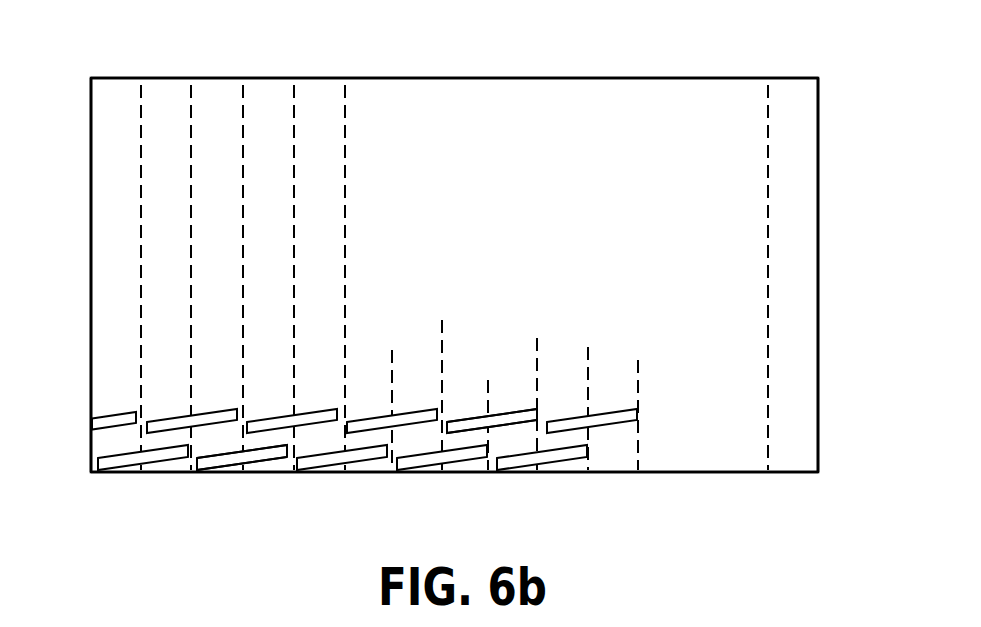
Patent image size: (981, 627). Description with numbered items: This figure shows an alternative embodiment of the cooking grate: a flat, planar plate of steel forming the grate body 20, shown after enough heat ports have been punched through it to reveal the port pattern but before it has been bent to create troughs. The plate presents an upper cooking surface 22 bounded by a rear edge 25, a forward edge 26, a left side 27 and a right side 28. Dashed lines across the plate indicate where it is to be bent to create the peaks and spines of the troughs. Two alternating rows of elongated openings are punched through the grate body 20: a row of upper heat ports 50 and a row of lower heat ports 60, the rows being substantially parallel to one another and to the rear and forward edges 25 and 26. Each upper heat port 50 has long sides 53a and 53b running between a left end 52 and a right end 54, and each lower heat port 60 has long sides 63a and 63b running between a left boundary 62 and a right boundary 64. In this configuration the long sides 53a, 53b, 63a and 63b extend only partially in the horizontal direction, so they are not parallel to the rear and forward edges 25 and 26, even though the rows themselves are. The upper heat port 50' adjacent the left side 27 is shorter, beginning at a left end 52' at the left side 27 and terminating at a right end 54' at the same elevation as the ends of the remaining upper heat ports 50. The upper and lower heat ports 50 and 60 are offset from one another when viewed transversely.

The grate body 20 is at (560, 102).
The upper cooking surface 22 is at (440, 105).
The rear edge 25 is at (651, 77).
The forward edge 26 is at (708, 472).
The left side 27 is at (90, 182).
The right side 28 is at (820, 262).
The upper heat port 50 is at (492, 353).
The upper heat port adjacent left side 50' is at (94, 402).
The left end of upper heat port 52 is at (463, 394).
The left end of left-side upper heat port 52' is at (61, 417).
The long side of upper heat port 53a is at (473, 417).
The long side of upper heat port 53b is at (508, 417).
The right end of upper heat port 54 is at (524, 387).
The right end of left-side upper heat port 54' is at (125, 389).
The lower heat port 60 is at (248, 458).
The left boundary of lower heat port 62 is at (205, 470).
The long side of lower heat port 63a is at (222, 458).
The long side of lower heat port 63b is at (275, 457).
The right boundary of lower heat port 64 is at (283, 455).